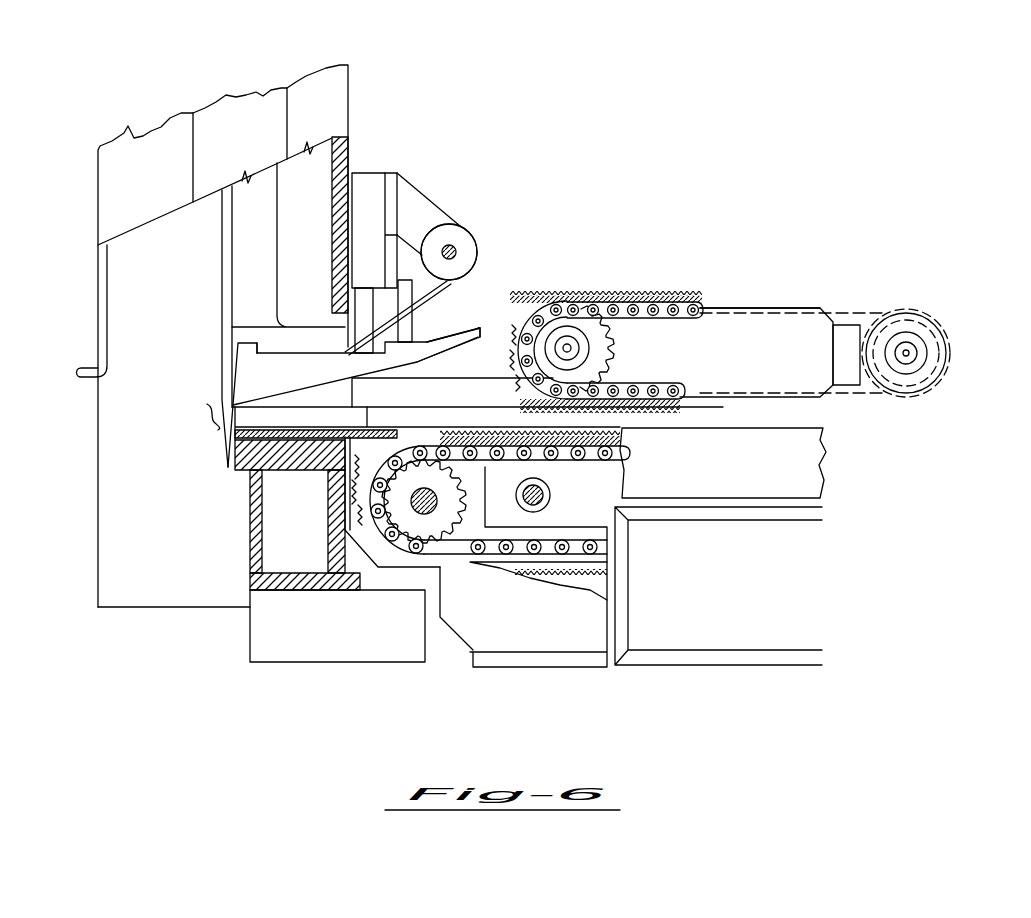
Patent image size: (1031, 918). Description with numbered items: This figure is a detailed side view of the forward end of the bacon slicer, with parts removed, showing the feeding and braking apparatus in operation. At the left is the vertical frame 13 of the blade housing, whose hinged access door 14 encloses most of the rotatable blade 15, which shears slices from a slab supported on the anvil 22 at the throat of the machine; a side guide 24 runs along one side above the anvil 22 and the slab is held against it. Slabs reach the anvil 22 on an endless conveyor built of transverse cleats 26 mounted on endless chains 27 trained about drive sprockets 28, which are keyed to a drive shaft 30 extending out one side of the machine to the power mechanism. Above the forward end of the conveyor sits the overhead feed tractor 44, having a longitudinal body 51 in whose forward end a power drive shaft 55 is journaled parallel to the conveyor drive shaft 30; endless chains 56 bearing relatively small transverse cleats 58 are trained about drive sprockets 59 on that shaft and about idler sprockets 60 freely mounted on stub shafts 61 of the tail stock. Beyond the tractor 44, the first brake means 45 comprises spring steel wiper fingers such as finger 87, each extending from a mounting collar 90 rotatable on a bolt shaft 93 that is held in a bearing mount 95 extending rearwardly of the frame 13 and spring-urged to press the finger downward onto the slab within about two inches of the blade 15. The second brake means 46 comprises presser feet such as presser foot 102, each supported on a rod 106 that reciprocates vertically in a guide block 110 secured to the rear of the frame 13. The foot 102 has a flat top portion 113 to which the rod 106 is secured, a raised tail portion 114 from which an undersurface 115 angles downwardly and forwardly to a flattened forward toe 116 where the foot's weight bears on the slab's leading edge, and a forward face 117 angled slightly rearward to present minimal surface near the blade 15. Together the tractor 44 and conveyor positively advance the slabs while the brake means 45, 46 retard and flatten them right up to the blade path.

The vertical frame 13 is at (350, 147).
The hinged access door 14 is at (110, 201).
The rotatable blade 15 is at (220, 372).
The anvil 22 is at (237, 468).
The side guide 24 is at (490, 401).
The transverse cleats 26 is at (577, 572).
The endless chains 27 is at (603, 547).
The drive sprockets 28 is at (426, 525).
The drive shaft 30 is at (416, 512).
The overhead feed tractor 44 is at (798, 308).
The first brake means 45 is at (481, 244).
The second brake means 46 is at (432, 335).
The longitudinal body 51 is at (766, 361).
The power drive shaft 55 is at (568, 346).
The endless chains 56 is at (682, 390).
The transverse cleats 58 is at (690, 292).
The drive sprockets 59 is at (597, 350).
The idler sprockets 60 is at (938, 365).
The stub shafts 61 is at (908, 355).
The wiper finger 87 is at (340, 352).
The mounting collar 90 is at (452, 230).
The bolt shaft 93 is at (455, 256).
The bearing mount 95 is at (432, 200).
The presser foot 102 is at (300, 385).
The rod 106 is at (360, 310).
The guide block 110 is at (375, 172).
The flat top portion 113 is at (289, 353).
The raised tail portion 114 is at (480, 330).
The undersurface 115 is at (418, 362).
The forward toe 116 is at (222, 420).
The forward face 117 is at (238, 352).